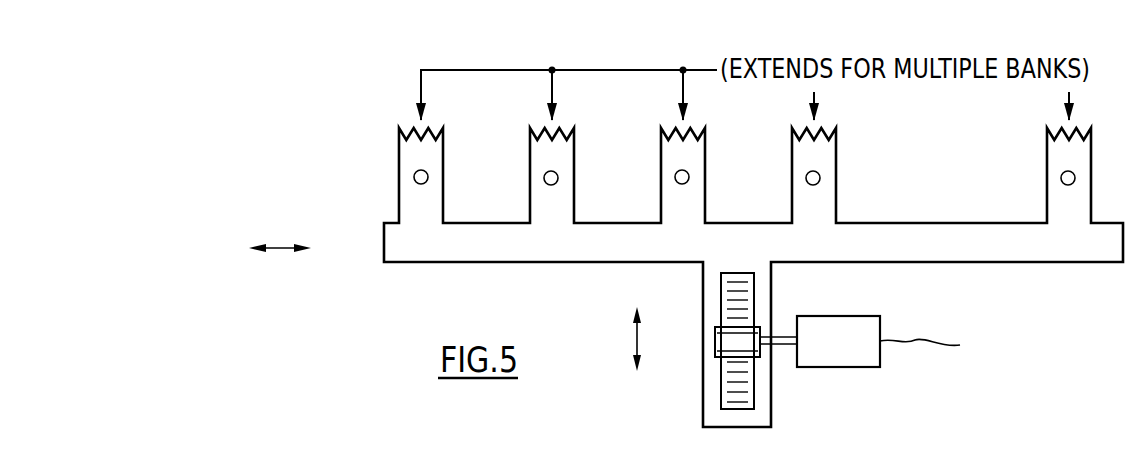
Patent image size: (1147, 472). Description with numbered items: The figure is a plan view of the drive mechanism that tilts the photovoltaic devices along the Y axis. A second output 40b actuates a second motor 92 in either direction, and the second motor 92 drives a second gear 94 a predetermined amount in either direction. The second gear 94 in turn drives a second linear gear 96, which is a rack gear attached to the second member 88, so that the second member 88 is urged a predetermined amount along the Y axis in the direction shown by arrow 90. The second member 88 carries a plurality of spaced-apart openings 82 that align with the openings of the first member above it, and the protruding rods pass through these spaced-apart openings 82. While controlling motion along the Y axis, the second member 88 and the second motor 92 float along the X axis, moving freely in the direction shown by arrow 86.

The second output 40b is at (915, 340).
The spaced-apart openings 82 is at (414, 176).
The arrow 86 is at (280, 247).
The second member 88 is at (477, 248).
The arrow 90 is at (633, 338).
The second motor 92 is at (833, 357).
The second gear 94 is at (753, 332).
The second linear gear 96 is at (750, 293).